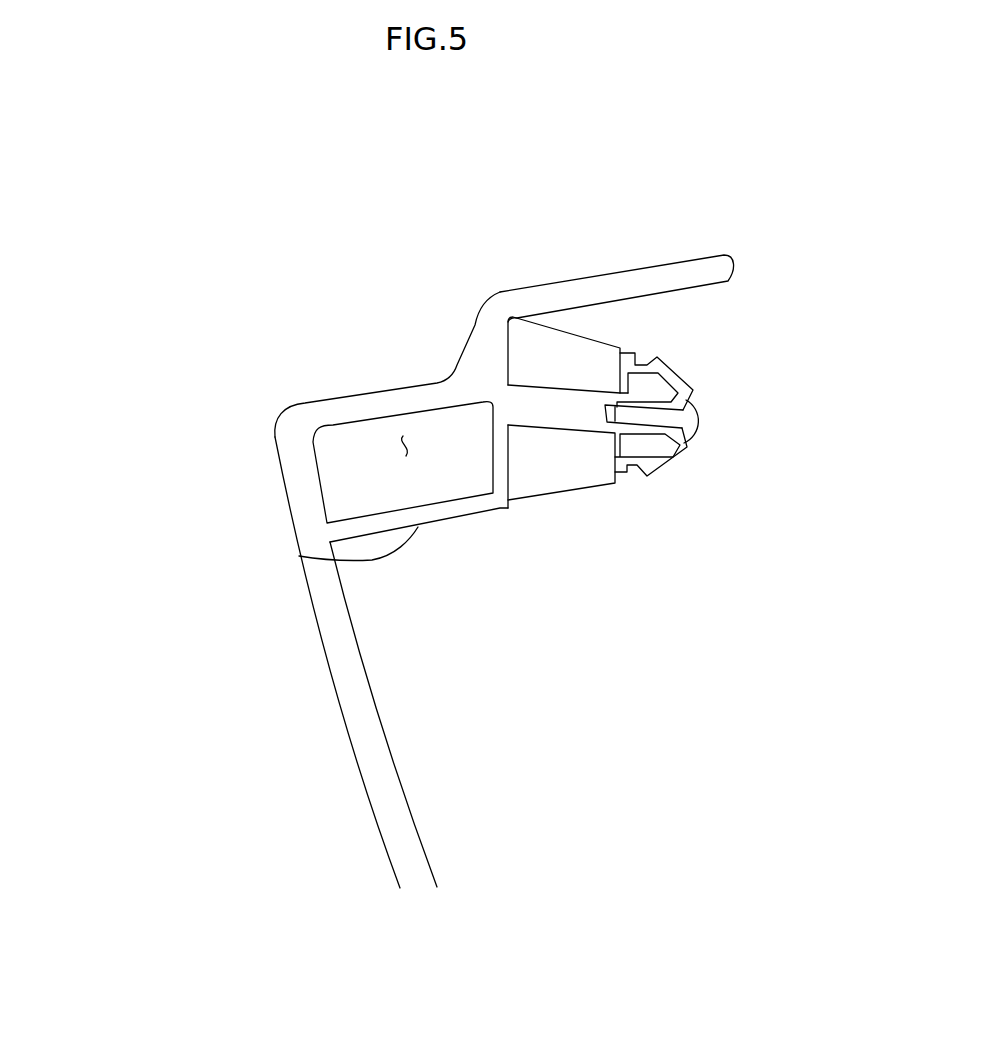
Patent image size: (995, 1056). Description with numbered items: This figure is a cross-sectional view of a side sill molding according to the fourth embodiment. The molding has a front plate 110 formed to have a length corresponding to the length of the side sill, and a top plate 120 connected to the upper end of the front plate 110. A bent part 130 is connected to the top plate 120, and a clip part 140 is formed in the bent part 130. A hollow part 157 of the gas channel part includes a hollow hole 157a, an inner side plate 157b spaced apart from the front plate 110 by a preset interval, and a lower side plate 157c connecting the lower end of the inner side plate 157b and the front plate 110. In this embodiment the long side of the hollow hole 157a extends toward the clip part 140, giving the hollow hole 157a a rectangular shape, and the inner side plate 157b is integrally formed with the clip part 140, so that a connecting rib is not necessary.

The front plate 110 is at (338, 678).
The top plate 120 is at (385, 405).
The bent part 130 is at (482, 322).
The clip part 140 is at (658, 364).
The hollow part 157 is at (155, 425).
The hollow hole 157a is at (400, 445).
The inner side plate 157b is at (500, 457).
The lower side plate 157c is at (318, 558).